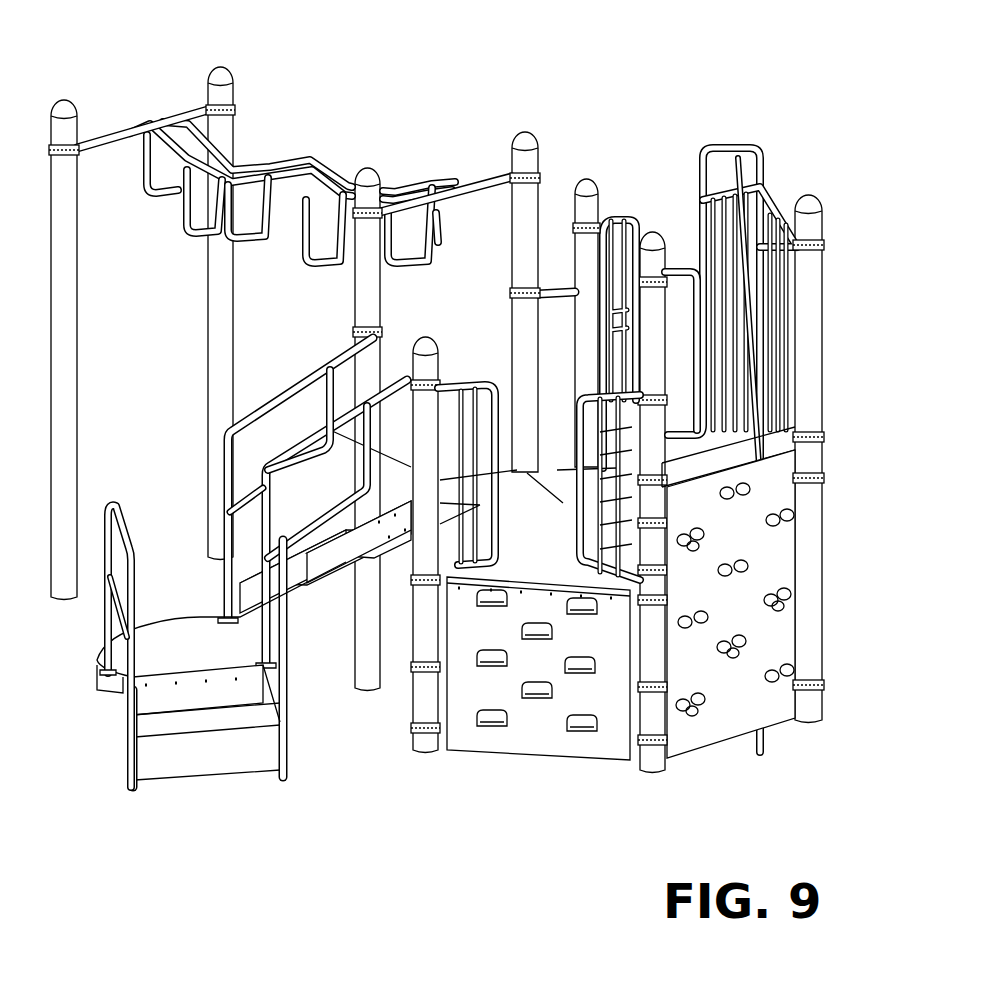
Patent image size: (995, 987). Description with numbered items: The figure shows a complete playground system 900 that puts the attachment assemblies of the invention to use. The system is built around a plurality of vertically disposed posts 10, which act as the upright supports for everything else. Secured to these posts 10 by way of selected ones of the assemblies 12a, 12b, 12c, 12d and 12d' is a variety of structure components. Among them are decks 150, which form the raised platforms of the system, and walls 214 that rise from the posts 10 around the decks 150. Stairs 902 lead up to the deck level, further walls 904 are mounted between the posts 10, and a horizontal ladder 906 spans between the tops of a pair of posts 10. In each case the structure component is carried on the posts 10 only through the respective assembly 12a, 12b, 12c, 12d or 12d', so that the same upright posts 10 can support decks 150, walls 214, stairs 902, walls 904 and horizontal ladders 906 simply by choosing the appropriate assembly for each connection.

The playground system 900 is at (660, 65).
The post 10 is at (67, 443).
The assembly 12a is at (600, 228).
The assembly 12b is at (823, 477).
The assembly 12c is at (410, 732).
The assembly 12d is at (355, 344).
The assembly 12d' is at (605, 623).
The deck 150 is at (548, 525).
The wall 214 is at (623, 217).
The stairs 902 is at (375, 581).
The wall 904 is at (560, 734).
The horizontal ladder 906 is at (147, 195).